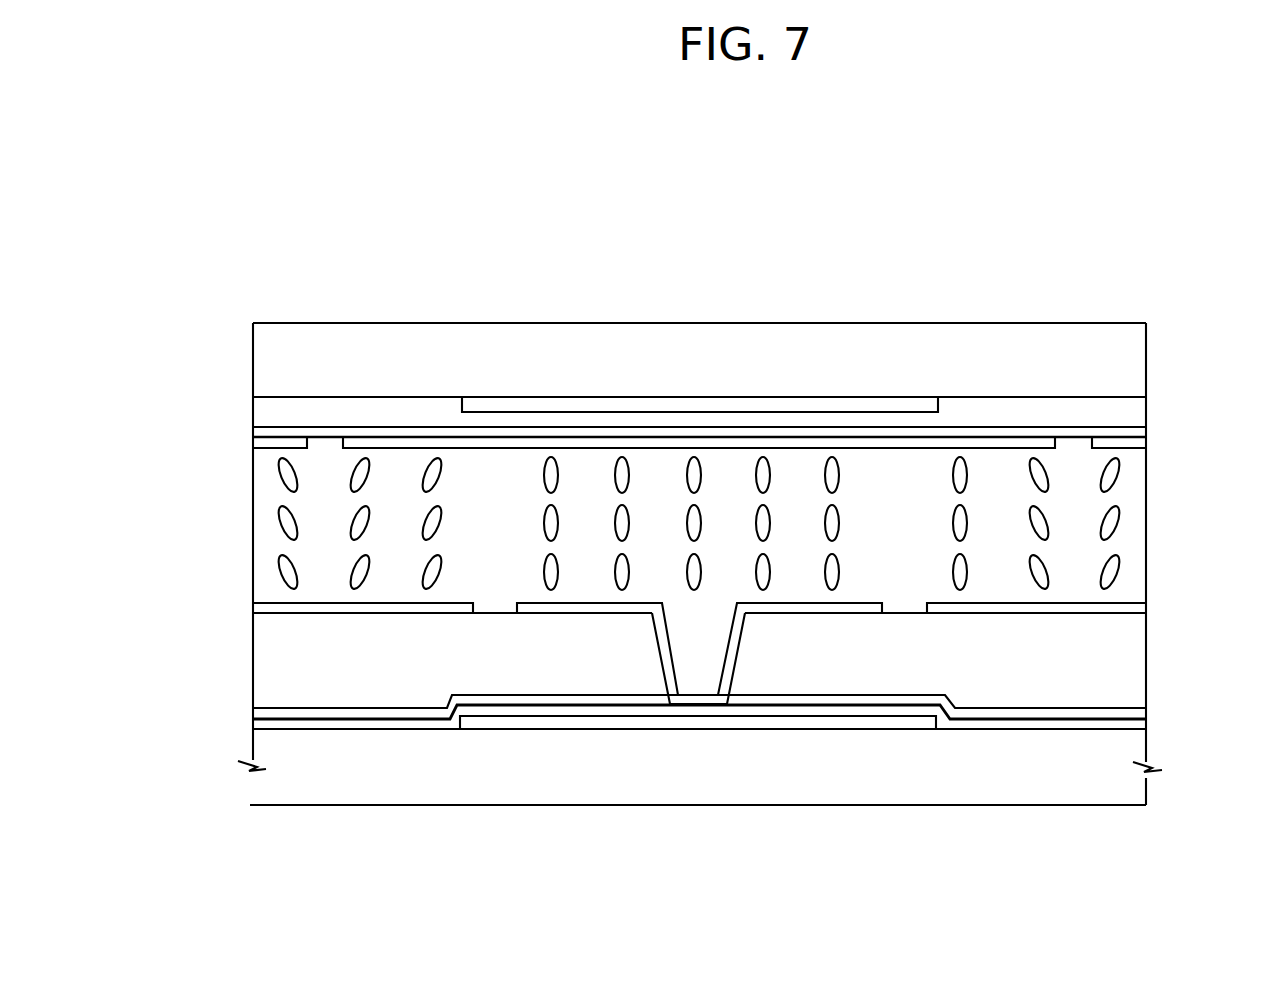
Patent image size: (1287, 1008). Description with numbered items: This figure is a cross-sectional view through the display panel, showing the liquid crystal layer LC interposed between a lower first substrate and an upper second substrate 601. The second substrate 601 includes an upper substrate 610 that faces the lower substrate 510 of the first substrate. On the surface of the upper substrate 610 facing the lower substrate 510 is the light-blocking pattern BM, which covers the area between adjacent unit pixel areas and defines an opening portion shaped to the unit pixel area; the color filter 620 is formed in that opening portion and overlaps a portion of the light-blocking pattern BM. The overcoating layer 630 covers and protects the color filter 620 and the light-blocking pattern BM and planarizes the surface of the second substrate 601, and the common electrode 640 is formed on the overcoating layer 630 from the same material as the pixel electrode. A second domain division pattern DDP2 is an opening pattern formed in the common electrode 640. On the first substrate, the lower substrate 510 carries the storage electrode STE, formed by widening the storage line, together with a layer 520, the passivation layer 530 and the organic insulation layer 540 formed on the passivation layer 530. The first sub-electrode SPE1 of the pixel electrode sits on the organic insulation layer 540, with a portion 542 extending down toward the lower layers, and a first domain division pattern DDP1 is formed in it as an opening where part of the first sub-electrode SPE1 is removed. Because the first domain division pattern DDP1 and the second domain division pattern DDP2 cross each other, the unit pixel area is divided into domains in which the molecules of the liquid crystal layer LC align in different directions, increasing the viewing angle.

The second substrate 601 is at (769, 503).
The upper substrate 610 is at (1146, 355).
The color filter 620 is at (740, 335).
The overcoating layer 630 is at (1146, 430).
The common electrode 640 is at (740, 351).
The light-blocking pattern BM is at (697, 405).
The second domain division pattern DDP2 is at (341, 441).
The liquid crystal layer LC is at (1160, 448).
The first sub-electrode SPE1 is at (702, 719).
The contact portion 542 is at (712, 633).
The first domain division pattern DDP1 is at (912, 604).
The organic insulation layer 540 is at (1146, 672).
The passivation layer 530 is at (1146, 710).
The gate insulating layer 520 is at (740, 806).
The storage electrode STE is at (695, 723).
The lower substrate 510 is at (1146, 778).